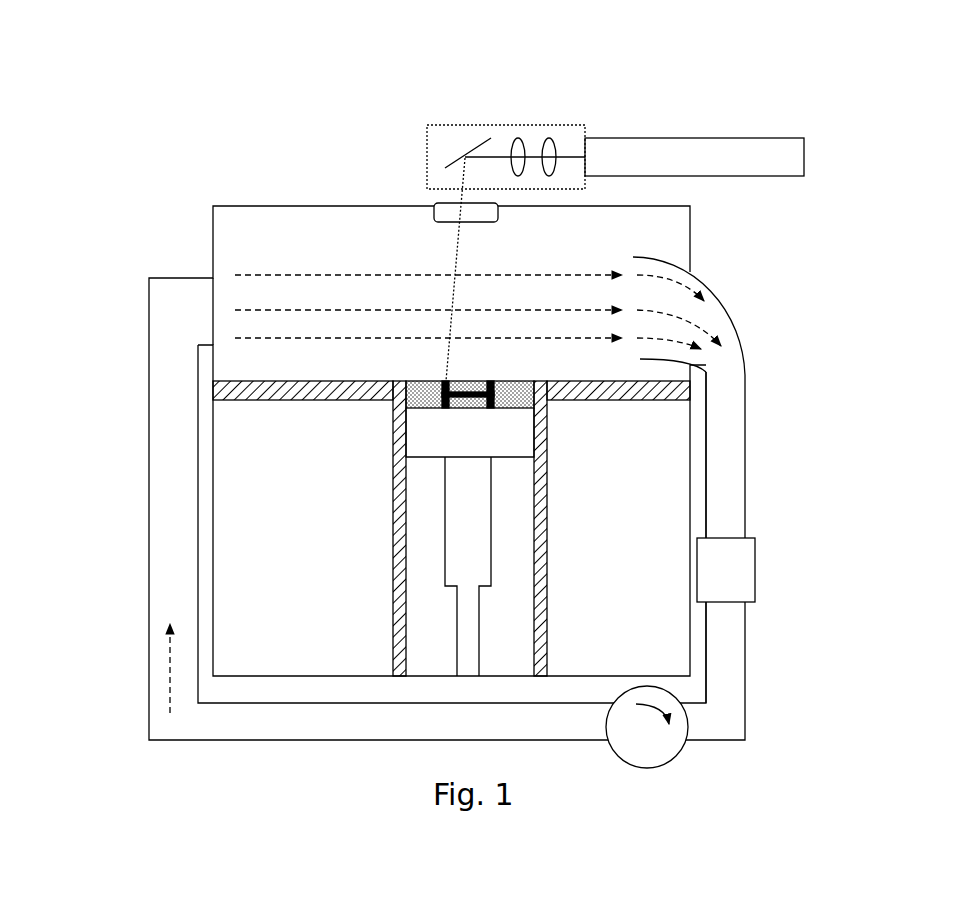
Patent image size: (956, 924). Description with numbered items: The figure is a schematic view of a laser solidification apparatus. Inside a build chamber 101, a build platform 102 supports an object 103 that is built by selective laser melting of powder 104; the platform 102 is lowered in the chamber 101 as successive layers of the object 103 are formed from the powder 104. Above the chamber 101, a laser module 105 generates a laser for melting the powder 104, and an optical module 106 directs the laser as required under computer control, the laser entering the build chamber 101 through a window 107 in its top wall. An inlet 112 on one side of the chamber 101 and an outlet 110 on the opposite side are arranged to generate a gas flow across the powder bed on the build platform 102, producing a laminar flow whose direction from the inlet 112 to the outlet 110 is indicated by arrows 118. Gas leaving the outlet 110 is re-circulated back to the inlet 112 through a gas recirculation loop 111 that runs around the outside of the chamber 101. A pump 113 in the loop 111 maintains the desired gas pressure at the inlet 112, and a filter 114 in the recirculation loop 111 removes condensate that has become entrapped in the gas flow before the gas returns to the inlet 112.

The build chamber 101 is at (210, 239).
The build platform 102 is at (516, 436).
The object 103 is at (446, 414).
The powder 104 is at (414, 403).
The laser module 105 is at (703, 133).
The optical module 106 is at (524, 121).
The window 107 is at (441, 203).
The outlet 110 is at (632, 254).
The gas recirculation loop 111 is at (750, 655).
The inlet 112 is at (210, 295).
The pump 113 is at (650, 774).
The filter 114 is at (761, 558).
The arrows 118 is at (352, 271).